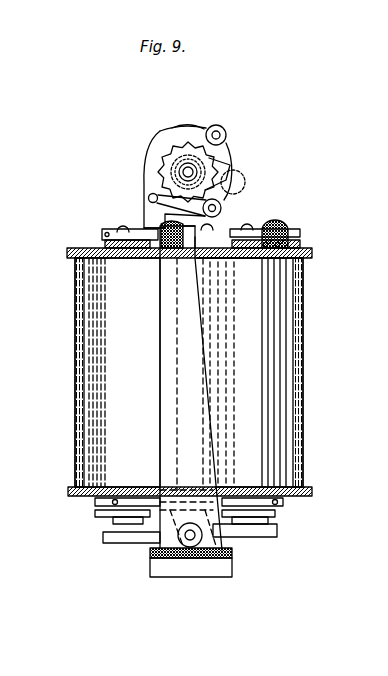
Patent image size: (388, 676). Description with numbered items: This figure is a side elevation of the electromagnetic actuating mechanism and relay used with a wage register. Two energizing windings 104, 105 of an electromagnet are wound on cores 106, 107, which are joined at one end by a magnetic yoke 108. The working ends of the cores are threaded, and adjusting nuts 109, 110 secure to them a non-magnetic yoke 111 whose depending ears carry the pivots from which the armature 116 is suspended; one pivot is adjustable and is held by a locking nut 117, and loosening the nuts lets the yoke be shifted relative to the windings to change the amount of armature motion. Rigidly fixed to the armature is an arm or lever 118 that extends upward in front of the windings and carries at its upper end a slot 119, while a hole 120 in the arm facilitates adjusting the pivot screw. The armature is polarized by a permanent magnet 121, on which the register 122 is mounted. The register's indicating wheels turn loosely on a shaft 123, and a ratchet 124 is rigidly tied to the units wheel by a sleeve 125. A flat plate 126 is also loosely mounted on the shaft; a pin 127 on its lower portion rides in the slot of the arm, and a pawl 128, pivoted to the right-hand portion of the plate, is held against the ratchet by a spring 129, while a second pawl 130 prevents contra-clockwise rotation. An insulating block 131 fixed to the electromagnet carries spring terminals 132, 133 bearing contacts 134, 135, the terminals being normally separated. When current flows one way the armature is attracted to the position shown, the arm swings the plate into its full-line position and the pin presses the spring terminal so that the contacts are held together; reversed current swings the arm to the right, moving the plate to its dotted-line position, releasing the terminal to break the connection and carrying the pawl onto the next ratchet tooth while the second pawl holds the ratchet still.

The energizing winding 104 is at (87, 392).
The energizing winding 105 is at (296, 393).
The core 106 is at (105, 245).
The core 107 is at (272, 260).
The magnetic yoke 108 is at (100, 232).
The adjusting nut 109 is at (97, 512).
The adjusting nut 110 is at (283, 513).
The non-magnetic yoke 111 is at (114, 519).
The armature 116 is at (127, 543).
The locking nut 117 is at (186, 560).
The arm or lever 118 is at (195, 452).
The slot 119 is at (163, 246).
The hole 120 is at (233, 549).
The permanent magnet 121 is at (148, 222).
The register 122 is at (157, 149).
The shaft 123 is at (213, 170).
The ratchet 124 is at (207, 146).
The sleeve 125 is at (186, 165).
The flat plate 126 is at (173, 173).
The pin 127 is at (158, 225).
The pawl 128 is at (218, 202).
The spring 129 is at (168, 240).
The second pawl 130 is at (177, 132).
The insulating block 131 is at (295, 238).
The spring terminal 132 is at (290, 232).
The spring terminal 133 is at (300, 243).
The contact 134 is at (180, 244).
The contact 135 is at (195, 240).